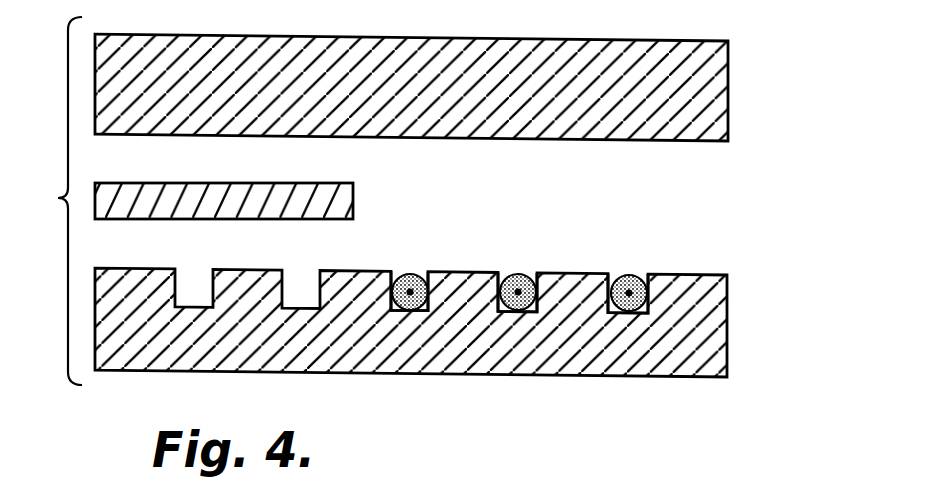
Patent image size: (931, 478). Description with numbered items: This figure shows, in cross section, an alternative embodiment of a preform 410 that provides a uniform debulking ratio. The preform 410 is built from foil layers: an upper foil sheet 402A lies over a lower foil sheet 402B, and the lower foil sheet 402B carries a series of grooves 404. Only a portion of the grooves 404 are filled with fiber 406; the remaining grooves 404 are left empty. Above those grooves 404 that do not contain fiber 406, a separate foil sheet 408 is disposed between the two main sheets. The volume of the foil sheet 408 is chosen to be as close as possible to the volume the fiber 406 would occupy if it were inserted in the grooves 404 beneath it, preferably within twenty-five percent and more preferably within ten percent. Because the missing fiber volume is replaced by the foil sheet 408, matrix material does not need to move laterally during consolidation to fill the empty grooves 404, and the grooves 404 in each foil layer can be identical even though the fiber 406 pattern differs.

The preform 410 is at (43, 201).
The foil sheet 402A is at (729, 82).
The foil sheet 402B is at (728, 315).
The separate foil sheet 408 is at (354, 202).
The grooves 404 is at (427, 314).
The fiber 406 is at (410, 276).